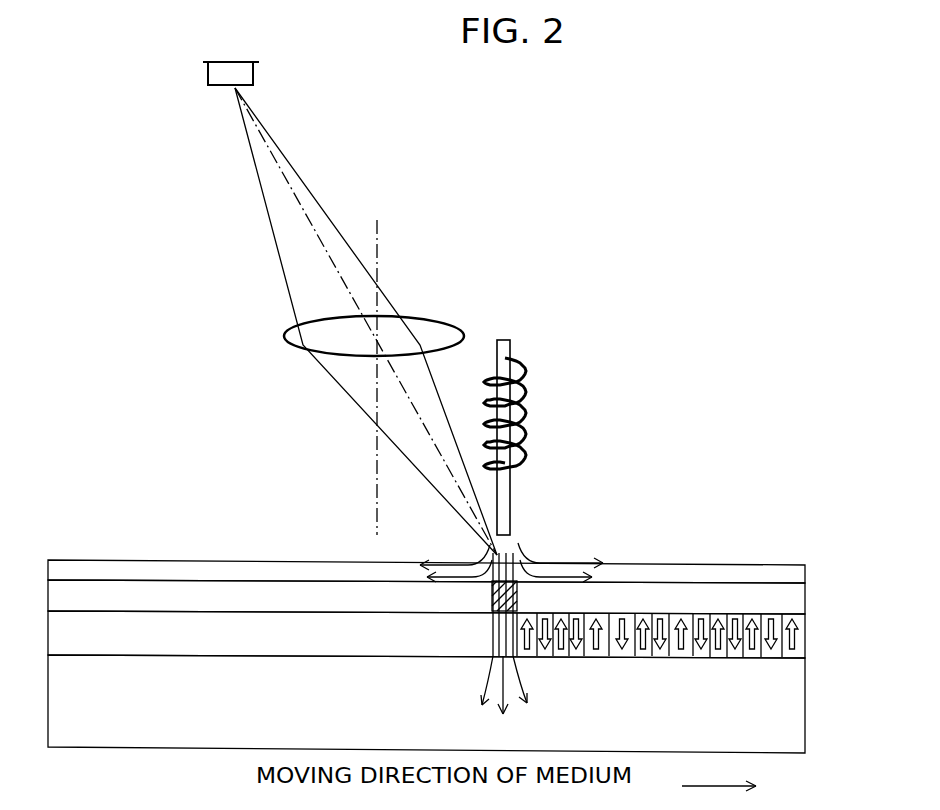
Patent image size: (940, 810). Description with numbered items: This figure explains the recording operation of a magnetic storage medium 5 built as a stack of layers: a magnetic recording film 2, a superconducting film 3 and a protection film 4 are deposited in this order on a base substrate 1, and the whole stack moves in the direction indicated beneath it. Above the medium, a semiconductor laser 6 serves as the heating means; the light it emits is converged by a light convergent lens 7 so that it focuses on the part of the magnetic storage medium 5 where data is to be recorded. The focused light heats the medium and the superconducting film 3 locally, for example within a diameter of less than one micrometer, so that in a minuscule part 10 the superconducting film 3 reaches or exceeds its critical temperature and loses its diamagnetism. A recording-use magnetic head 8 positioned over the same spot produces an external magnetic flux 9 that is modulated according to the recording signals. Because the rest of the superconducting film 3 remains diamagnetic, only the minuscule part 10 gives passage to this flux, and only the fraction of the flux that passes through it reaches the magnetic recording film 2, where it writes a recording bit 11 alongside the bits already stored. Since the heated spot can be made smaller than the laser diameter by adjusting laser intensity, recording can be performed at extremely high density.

The base substrate 1 is at (454, 704).
The magnetic recording film 2 is at (800, 635).
The superconducting film 3 is at (795, 600).
The protection film 4 is at (800, 575).
The magnetic storage medium 5 is at (475, 659).
The semiconductor laser 6 is at (254, 70).
The light convergent lens 7 is at (429, 318).
The recording-use magnetic head 8 is at (518, 350).
The external magnetic flux 9 is at (482, 681).
The minuscule part 10 is at (492, 605).
The recording bit 11 is at (640, 657).